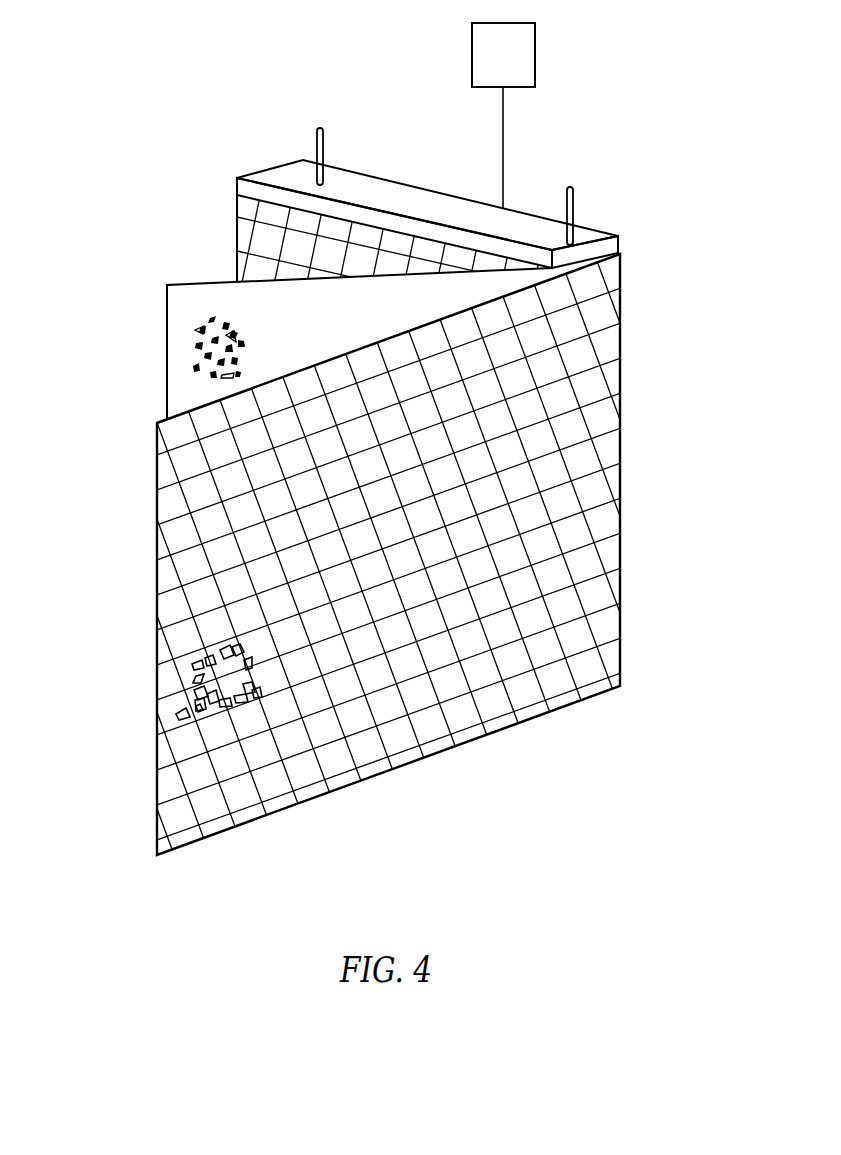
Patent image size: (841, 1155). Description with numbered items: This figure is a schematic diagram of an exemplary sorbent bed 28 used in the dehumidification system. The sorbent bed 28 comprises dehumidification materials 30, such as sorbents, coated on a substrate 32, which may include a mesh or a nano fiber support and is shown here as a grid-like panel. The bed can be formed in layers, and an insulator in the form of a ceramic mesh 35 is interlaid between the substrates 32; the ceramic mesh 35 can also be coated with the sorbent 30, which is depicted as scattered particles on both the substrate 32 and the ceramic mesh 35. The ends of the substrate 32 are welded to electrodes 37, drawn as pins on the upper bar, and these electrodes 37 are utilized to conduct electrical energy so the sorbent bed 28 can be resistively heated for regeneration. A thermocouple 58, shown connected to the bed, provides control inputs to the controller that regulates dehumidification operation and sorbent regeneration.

The sorbent bed 28 is at (655, 393).
The dehumidification material 30 is at (190, 363).
The substrate 32 is at (237, 228).
The ceramic mesh 35 is at (167, 315).
The electrode 37 is at (324, 142).
The thermocouple 58 is at (519, 69).